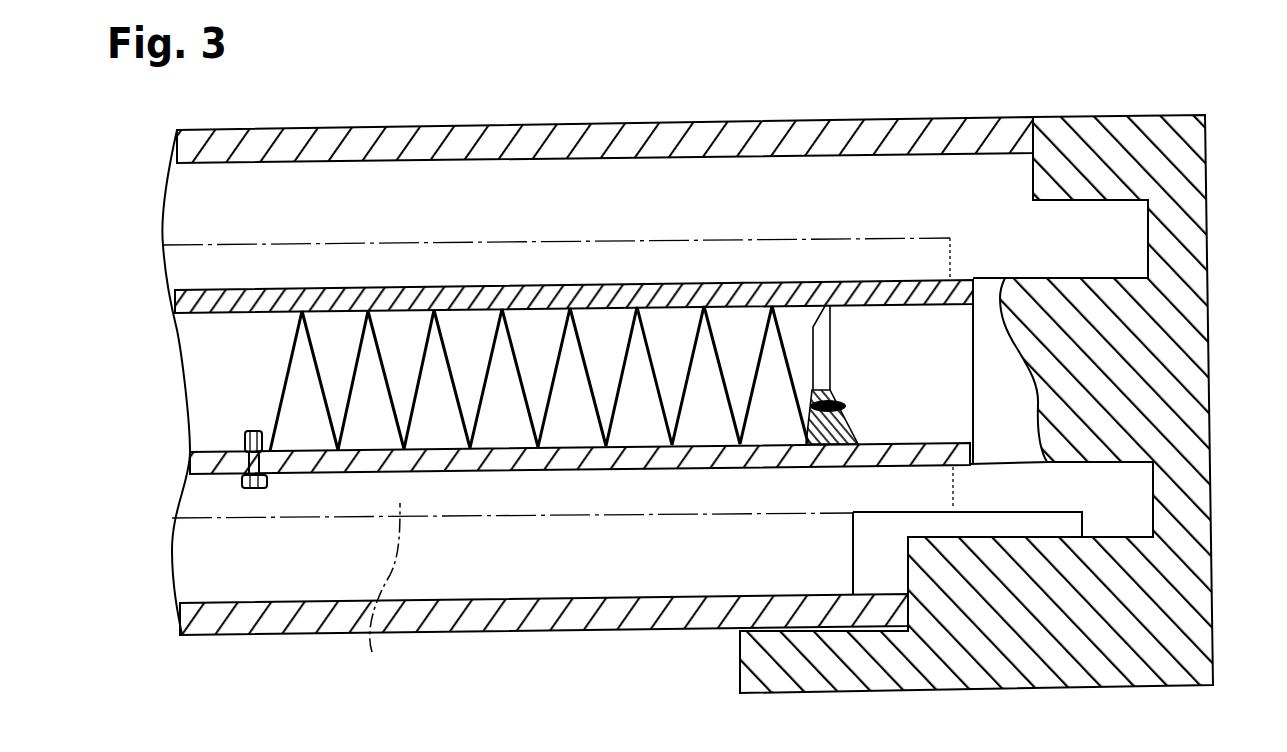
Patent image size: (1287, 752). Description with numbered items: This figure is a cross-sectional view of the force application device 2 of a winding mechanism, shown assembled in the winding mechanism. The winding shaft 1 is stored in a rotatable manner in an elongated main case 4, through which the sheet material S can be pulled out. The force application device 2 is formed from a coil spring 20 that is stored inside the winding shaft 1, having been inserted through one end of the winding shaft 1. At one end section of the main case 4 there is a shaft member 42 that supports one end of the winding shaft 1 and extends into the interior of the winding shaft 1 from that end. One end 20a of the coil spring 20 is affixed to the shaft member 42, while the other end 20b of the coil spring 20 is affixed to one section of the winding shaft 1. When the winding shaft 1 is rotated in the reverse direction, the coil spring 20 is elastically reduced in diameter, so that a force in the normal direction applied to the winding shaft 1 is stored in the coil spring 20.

The winding shaft 1 is at (173, 299).
The force application device 2 is at (577, 333).
The coil spring 20 is at (539, 266).
The one end of the coil spring 20a is at (830, 390).
The other end of the coil spring 20b is at (233, 483).
The main case 4 is at (535, 628).
The shaft member 42 is at (937, 405).
The sheet material S is at (382, 591).